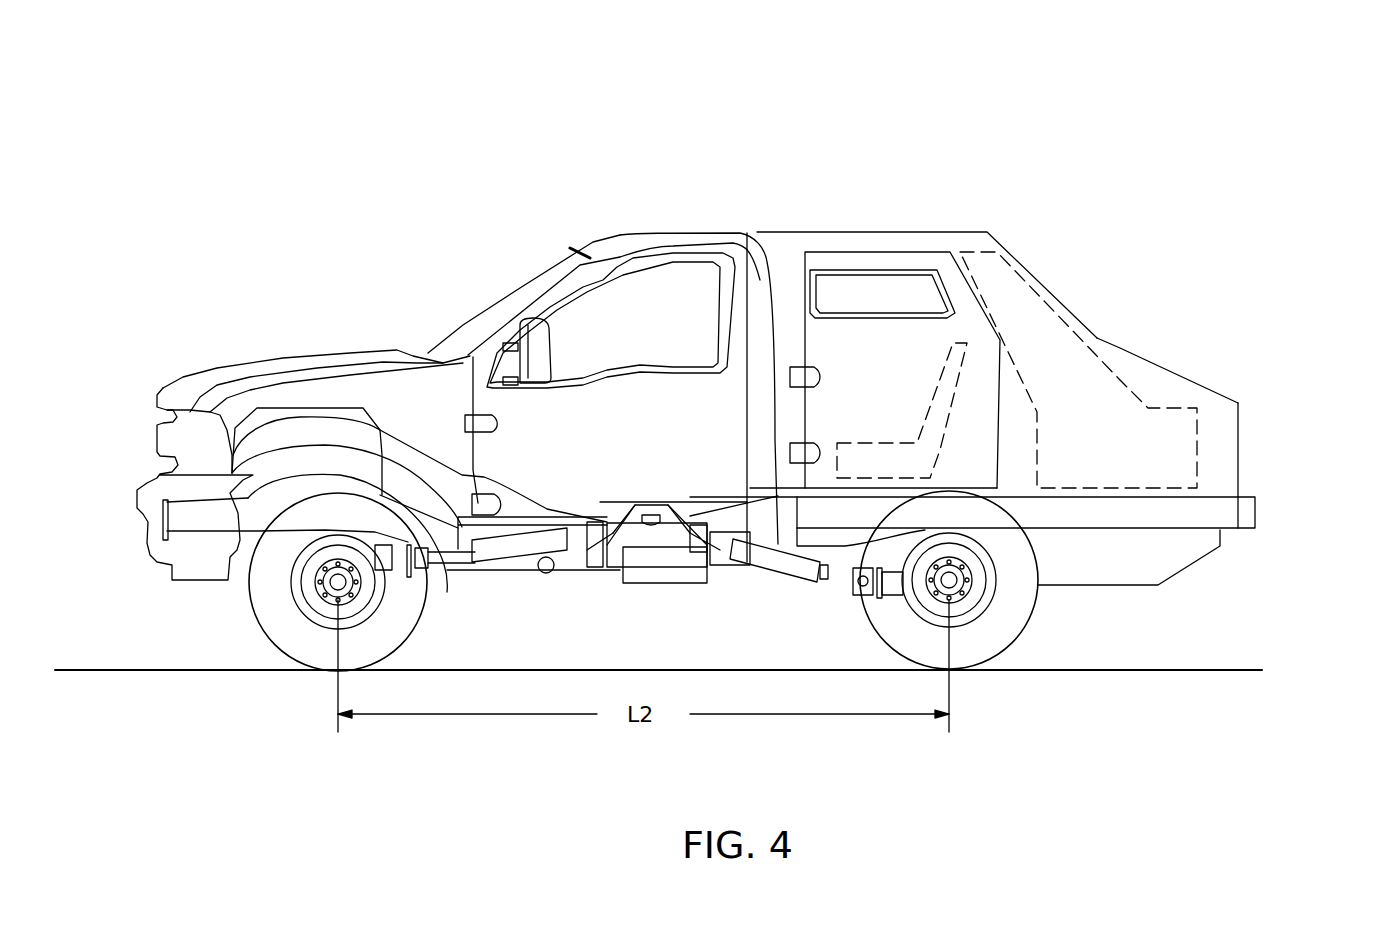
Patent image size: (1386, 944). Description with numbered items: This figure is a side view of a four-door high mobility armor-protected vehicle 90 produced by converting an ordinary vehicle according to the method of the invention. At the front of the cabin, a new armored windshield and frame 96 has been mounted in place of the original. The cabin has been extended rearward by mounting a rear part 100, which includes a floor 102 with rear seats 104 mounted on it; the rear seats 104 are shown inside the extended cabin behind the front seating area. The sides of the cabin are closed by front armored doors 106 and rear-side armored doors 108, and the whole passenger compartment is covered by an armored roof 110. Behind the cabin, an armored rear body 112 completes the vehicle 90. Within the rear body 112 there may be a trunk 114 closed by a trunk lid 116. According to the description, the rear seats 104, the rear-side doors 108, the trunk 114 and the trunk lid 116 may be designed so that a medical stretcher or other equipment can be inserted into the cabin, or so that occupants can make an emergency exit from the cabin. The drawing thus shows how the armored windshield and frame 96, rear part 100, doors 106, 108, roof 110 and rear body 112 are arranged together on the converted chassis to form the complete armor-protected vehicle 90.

The high mobility armor-protected vehicle 90 is at (223, 193).
The armored windshield and frame 96 is at (522, 300).
The rear part 100 is at (857, 170).
The floor 102 is at (1037, 497).
The rear seats 104 is at (946, 395).
The front armored doors 106 is at (705, 420).
The rear-side armored doors 108 is at (835, 402).
The armored roof 110 is at (842, 232).
The armored rear body 112 is at (1133, 245).
The trunk 114 is at (1122, 380).
The trunk lid 116 is at (1243, 452).